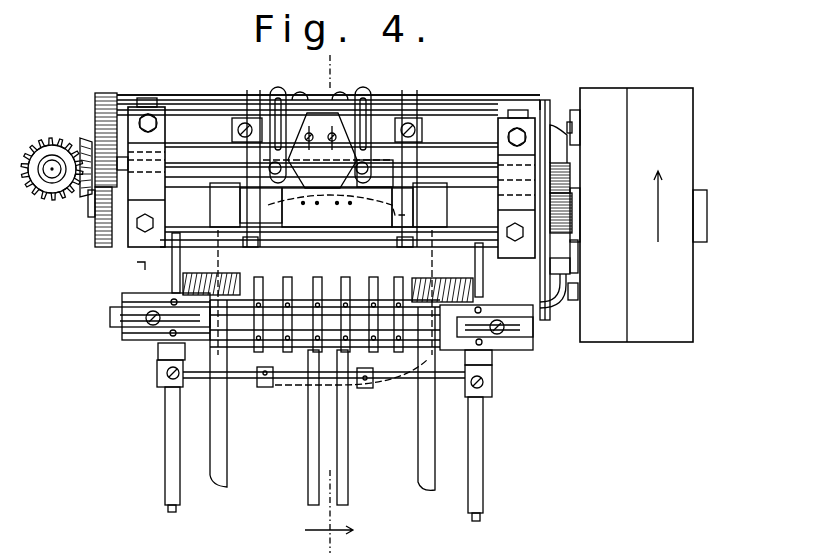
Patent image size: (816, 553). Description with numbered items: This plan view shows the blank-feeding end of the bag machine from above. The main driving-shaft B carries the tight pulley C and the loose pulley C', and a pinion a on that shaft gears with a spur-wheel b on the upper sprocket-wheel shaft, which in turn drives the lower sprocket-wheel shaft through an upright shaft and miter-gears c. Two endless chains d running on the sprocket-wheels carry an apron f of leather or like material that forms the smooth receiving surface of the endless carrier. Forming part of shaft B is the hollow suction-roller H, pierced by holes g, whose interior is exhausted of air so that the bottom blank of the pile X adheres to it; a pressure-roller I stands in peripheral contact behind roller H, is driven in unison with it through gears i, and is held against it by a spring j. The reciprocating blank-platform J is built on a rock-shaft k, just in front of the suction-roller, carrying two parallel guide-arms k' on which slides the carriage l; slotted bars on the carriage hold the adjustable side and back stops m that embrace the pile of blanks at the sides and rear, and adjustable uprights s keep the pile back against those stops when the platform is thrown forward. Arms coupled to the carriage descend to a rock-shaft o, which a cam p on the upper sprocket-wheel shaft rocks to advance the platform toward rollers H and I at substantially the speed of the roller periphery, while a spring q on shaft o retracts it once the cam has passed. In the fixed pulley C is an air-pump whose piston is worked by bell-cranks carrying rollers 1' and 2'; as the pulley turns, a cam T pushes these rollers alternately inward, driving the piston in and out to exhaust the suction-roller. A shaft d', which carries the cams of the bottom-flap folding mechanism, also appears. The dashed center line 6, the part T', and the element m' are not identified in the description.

The center line 6 is at (329, 303).
The spur-wheel b is at (95, 117).
The pinion a is at (95, 217).
The miter-gears c is at (56, 180).
The apron f is at (326, 99).
The adjustable uprights s is at (269, 168).
The cam T is at (322, 150).
The pressure-roller I is at (375, 173).
The pile of blanks X is at (261, 205).
The holes or perforations g is at (336, 207).
The suction-roller H is at (388, 207).
The main driving-shaft B is at (442, 205).
The spring j is at (471, 107).
The cam p is at (550, 122).
The roller 2' is at (584, 127).
The gears i is at (571, 181).
The tight pulley C is at (636, 215).
The loose pulley C' is at (678, 245).
The bracket T' is at (563, 257).
The roller 1' is at (566, 291).
The shaft d' is at (226, 292).
The Vaucauson chains d is at (353, 307).
The spring q is at (206, 276).
The rock-shaft o is at (345, 283).
The rock-shaft k is at (372, 269).
The reciprocating blank-platform J is at (322, 395).
The bar end m' is at (407, 450).
The carriage l is at (160, 390).
The guide-arms k' is at (310, 395).
The side and back stops m is at (315, 391).